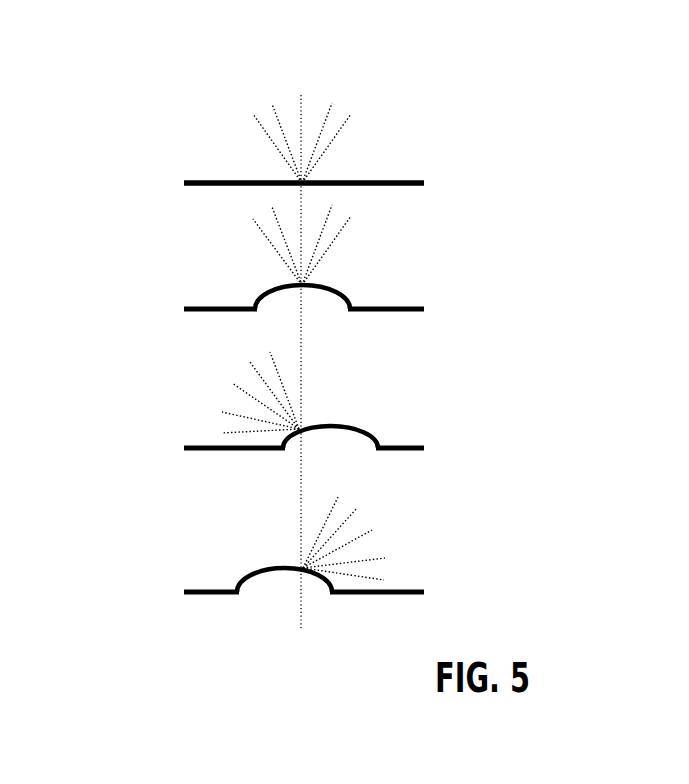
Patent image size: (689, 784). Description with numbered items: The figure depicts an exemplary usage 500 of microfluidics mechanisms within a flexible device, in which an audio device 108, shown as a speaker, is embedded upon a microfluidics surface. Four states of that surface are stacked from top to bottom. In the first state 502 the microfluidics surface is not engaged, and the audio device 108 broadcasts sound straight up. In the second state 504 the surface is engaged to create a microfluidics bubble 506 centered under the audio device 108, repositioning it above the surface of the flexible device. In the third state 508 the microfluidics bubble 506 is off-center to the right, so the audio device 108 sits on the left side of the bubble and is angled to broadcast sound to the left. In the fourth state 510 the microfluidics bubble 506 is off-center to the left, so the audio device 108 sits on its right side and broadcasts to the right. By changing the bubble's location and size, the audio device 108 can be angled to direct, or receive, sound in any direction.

The exemplary usage 500 is at (143, 72).
The microfluidics surface not engaged state 502 is at (274, 186).
The centered bubble state 504 is at (274, 304).
The microfluidics bubble 506 is at (317, 590).
The right-offset bubble state 508 is at (278, 447).
The left-offset bubble state 510 is at (278, 593).
The audio device 108 is at (315, 172).